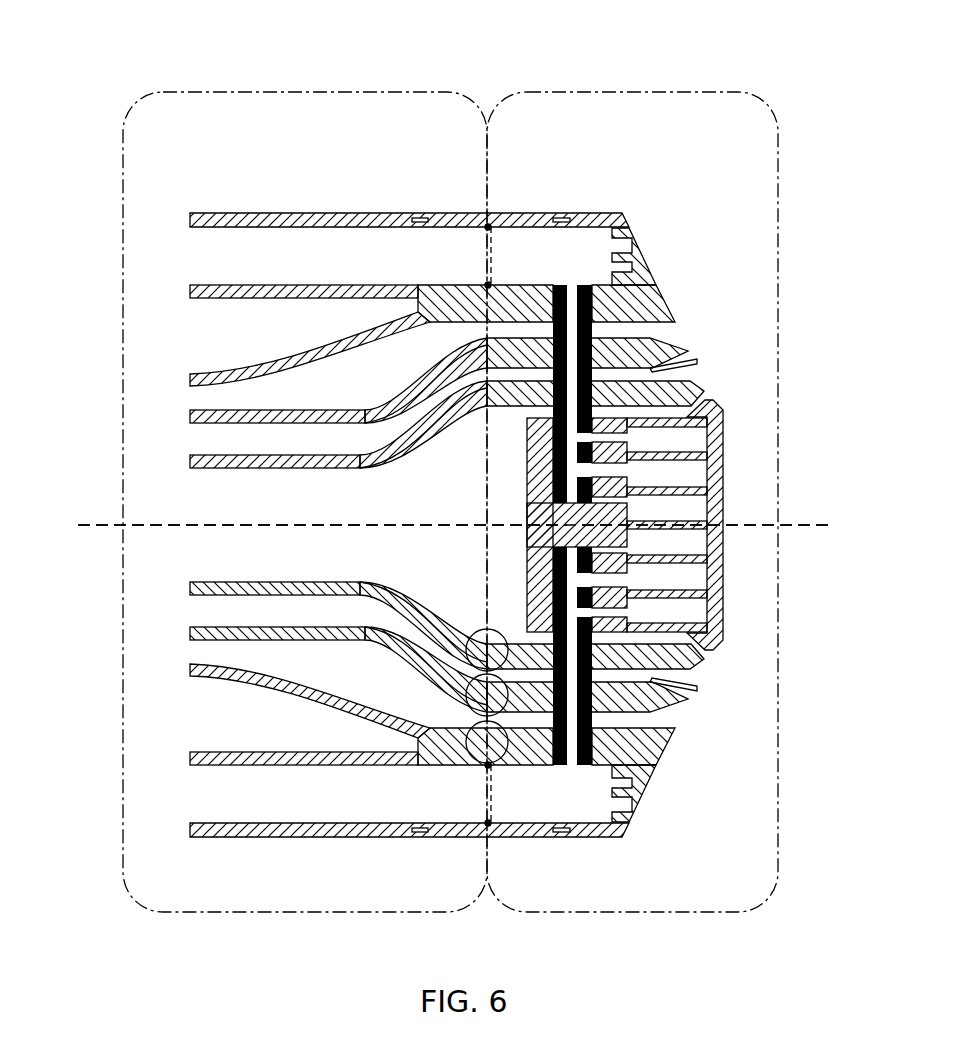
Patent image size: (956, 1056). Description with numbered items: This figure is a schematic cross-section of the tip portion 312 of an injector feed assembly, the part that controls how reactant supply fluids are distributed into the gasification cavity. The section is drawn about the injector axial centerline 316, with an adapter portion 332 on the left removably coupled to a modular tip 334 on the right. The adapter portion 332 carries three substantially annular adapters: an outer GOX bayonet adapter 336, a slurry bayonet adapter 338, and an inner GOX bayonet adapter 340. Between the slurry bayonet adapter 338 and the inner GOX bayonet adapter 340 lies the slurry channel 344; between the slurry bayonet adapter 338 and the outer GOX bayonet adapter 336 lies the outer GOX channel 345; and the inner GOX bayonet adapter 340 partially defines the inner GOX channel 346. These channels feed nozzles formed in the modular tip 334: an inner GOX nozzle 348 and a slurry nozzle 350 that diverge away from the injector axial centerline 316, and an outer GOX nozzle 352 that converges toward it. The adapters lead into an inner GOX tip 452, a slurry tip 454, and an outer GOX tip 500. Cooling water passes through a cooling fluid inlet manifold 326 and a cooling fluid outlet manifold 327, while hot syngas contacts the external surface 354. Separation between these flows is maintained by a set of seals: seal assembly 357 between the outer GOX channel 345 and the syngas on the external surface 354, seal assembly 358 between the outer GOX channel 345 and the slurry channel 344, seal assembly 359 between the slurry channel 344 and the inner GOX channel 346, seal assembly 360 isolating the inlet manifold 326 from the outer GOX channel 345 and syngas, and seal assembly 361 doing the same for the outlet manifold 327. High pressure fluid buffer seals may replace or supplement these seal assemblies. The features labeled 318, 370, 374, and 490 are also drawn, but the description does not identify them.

The tip portion 312 is at (137, 31).
The injector axial centerline 316 is at (100, 527).
The second side 318 is at (820, 527).
The cooling fluid inlet manifold 326 is at (301, 804).
The cooling fluid outlet manifold 327 is at (442, 264).
The adapter portion 332 is at (290, 112).
The modular tip 334 is at (735, 121).
The outer GOX bayonet adapter 336 is at (188, 383).
The slurry bayonet adapter 338 is at (188, 416).
The inner GOX bayonet adapter 340 is at (188, 461).
The slurry channel 344 is at (311, 448).
The outer GOX channel 345 is at (356, 390).
The inner GOX channel 346 is at (265, 506).
The inner GOX nozzle 348 is at (708, 395).
The slurry nozzle 350 is at (701, 360).
The outer GOX nozzle 352 is at (684, 331).
The external surface 354 is at (322, 341).
The seal assembly 357 is at (477, 760).
The seal assembly 358 is at (466, 703).
The seal assembly 359 is at (476, 630).
The seal assembly 360 is at (491, 765).
The seal assembly 361 is at (491, 285).
The flow path 370 is at (573, 767).
The flow path 374 is at (573, 283).
The inner GOX tip 452 is at (704, 380).
The slurry tip 454 is at (694, 349).
The heat shield 490 is at (726, 470).
The outer GOX tip 500 is at (667, 306).